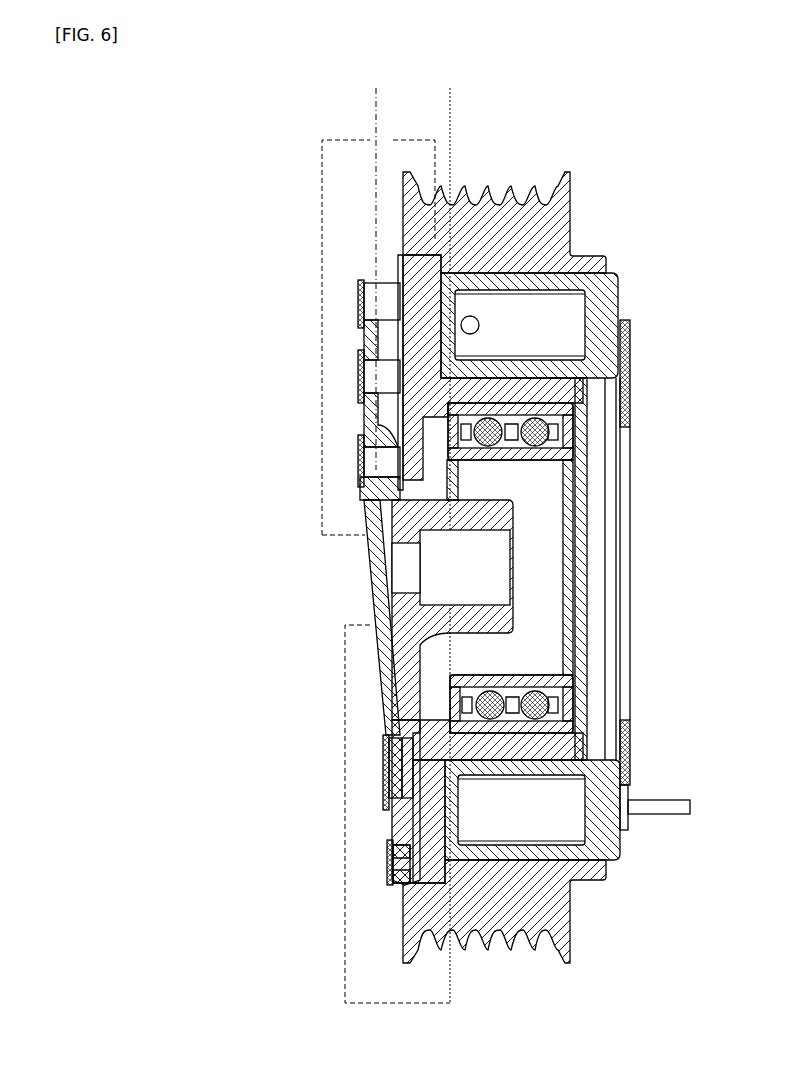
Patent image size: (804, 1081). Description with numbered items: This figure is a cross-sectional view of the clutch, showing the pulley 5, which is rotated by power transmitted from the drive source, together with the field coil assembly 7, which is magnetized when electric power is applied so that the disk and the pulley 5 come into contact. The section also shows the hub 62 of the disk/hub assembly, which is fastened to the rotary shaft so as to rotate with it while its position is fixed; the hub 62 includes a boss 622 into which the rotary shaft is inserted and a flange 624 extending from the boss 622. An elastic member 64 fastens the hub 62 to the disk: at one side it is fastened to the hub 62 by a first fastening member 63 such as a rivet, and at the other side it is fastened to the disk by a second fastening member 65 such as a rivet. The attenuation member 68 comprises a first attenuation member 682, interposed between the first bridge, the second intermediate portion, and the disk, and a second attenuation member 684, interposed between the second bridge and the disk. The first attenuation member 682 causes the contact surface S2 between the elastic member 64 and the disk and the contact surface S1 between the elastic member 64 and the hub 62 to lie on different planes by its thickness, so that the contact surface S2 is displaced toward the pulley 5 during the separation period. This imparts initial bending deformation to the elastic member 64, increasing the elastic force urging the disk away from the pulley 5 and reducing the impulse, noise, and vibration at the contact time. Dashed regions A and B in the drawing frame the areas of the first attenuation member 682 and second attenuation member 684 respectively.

The pulley 5 is at (570, 215).
The field coil assembly 7 is at (618, 305).
The hub 62 is at (578, 692).
The boss 622 is at (583, 522).
The flange 624 is at (420, 660).
The first fastening member 63 is at (375, 455).
The elastic member 64 is at (360, 583).
The second fastening member 65 is at (388, 863).
The attenuation member 68 is at (440, 200).
The first attenuation member 682 is at (358, 378).
The second attenuation member 684 is at (378, 770).
The region A is at (322, 175).
The region B is at (345, 935).
The contact surface between elastic member and hub S1 is at (364, 279).
The contact surface between elastic member and disk S2 is at (425, 545).